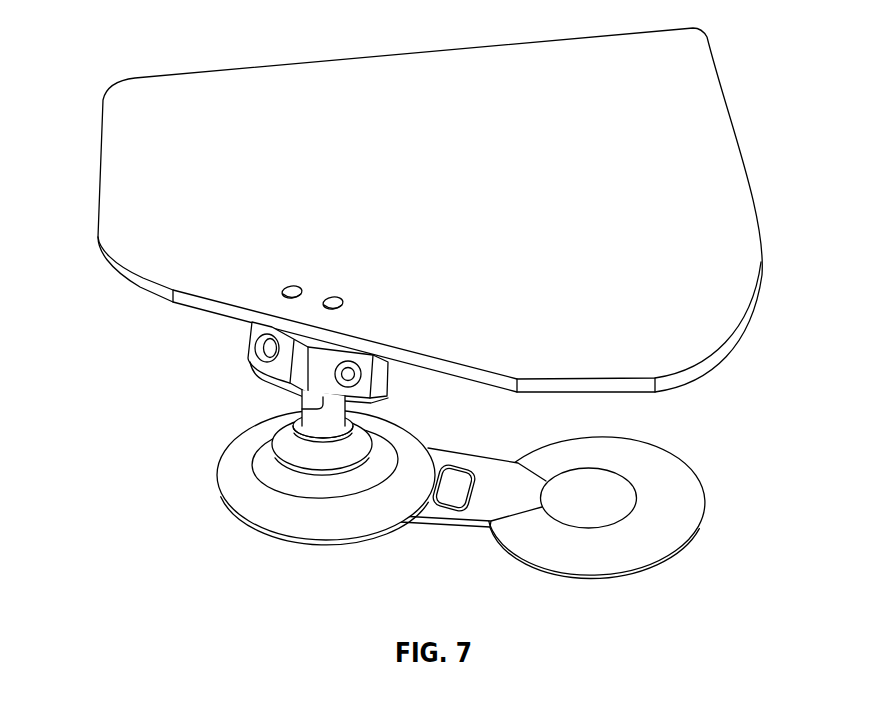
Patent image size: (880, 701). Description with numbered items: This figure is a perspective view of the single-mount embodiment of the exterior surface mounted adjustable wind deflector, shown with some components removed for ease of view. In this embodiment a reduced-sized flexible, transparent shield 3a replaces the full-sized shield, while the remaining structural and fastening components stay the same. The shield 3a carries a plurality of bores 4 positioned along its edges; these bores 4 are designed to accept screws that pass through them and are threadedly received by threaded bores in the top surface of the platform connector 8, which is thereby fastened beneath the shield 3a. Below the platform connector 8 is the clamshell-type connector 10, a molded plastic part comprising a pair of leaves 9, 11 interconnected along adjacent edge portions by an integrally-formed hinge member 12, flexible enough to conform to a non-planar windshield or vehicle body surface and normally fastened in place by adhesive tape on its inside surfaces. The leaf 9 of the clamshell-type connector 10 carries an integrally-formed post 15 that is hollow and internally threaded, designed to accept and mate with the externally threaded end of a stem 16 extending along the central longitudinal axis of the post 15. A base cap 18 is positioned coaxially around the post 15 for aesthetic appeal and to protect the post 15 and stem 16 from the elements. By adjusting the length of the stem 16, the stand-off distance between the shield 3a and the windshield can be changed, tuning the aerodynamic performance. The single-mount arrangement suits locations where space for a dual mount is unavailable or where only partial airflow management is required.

The reduced-sized flexible, transparent shield 3a is at (732, 152).
The bores 4 is at (290, 286).
The platform connector 8 is at (252, 332).
The leaf 9 is at (217, 493).
The clamshell-type connector 10 is at (462, 486).
The leaf 11 is at (705, 512).
The hinge member 12 is at (441, 528).
The post 15 is at (353, 420).
The stem 16 is at (301, 422).
The base cap 18 is at (260, 460).